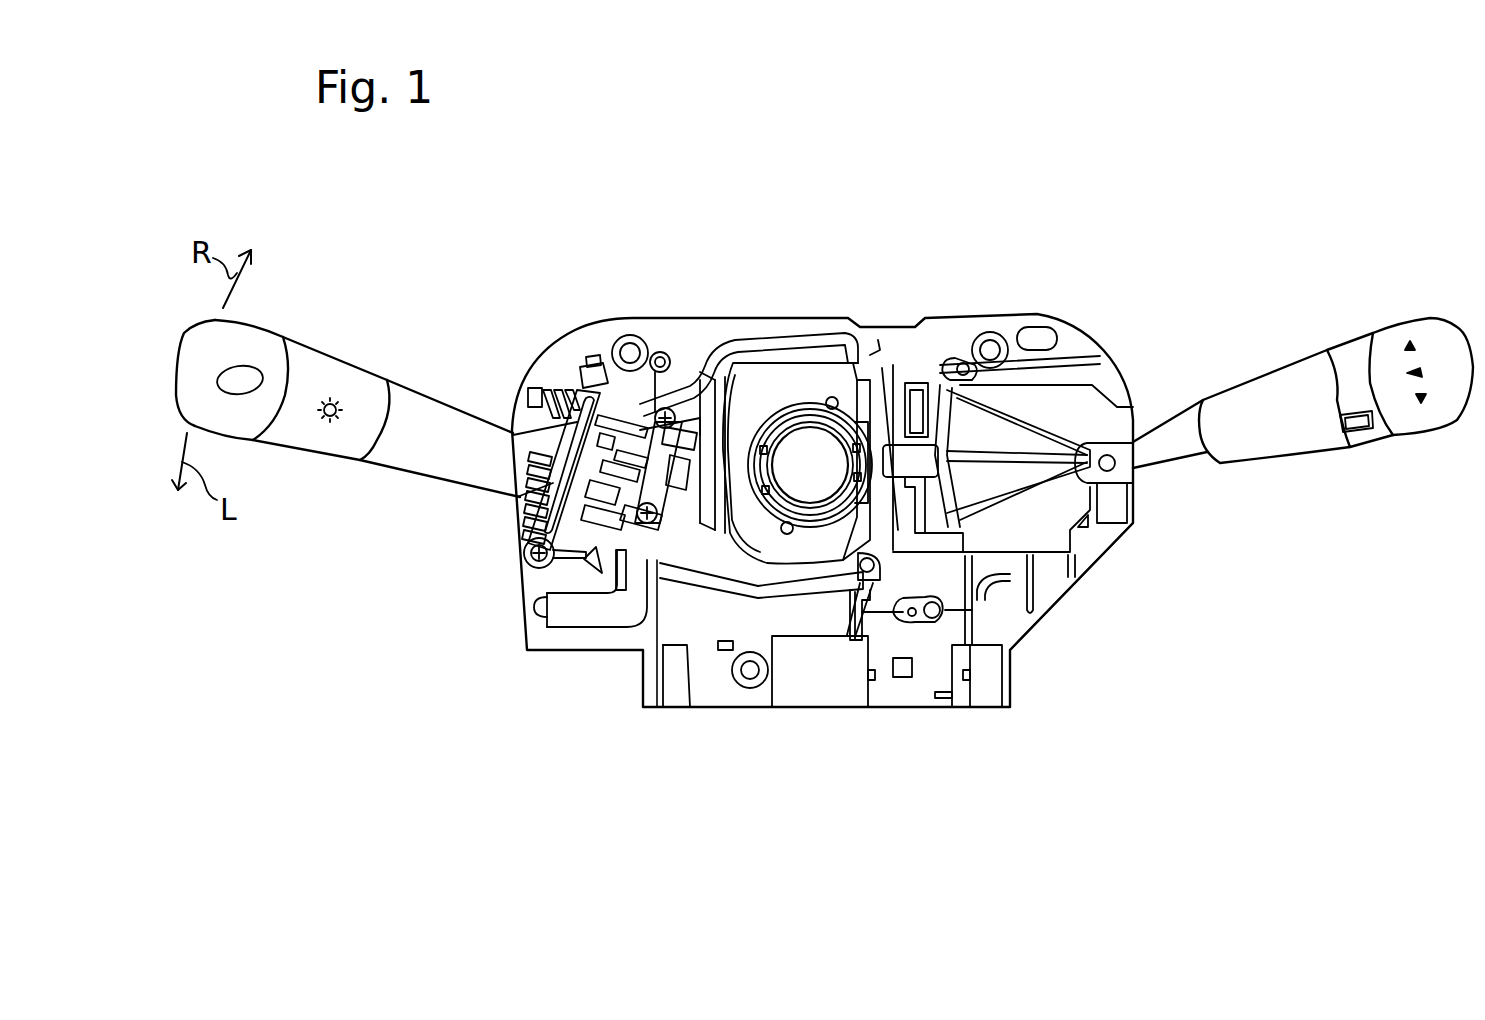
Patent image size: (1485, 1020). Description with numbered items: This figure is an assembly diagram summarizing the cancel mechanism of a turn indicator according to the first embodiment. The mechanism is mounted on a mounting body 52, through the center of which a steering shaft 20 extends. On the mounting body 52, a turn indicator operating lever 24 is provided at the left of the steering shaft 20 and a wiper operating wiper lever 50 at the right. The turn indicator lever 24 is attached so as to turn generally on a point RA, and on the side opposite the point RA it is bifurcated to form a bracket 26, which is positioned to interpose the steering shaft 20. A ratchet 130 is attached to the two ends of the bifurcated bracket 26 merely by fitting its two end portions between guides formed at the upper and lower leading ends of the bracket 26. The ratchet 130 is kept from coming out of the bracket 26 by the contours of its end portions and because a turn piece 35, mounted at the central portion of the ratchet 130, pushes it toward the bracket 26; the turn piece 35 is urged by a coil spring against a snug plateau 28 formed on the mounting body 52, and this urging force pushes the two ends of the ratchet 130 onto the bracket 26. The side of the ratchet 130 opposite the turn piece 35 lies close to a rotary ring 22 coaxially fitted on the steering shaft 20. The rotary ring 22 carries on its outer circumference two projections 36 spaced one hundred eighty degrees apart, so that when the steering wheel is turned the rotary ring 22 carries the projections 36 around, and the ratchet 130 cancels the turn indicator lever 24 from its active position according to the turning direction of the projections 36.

The steering shaft 20 is at (793, 492).
The rotary ring 22 is at (760, 436).
The turn indicator operating lever 24 is at (323, 347).
The bracket 26 is at (778, 342).
The snug plateau 28 is at (930, 380).
The turn piece 35 is at (950, 455).
The projections 36 is at (829, 397).
The wiper operating wiper lever 50 is at (1271, 452).
The mounting body 52 is at (1053, 590).
The ratchet 130 is at (883, 375).
The point RA is at (537, 493).